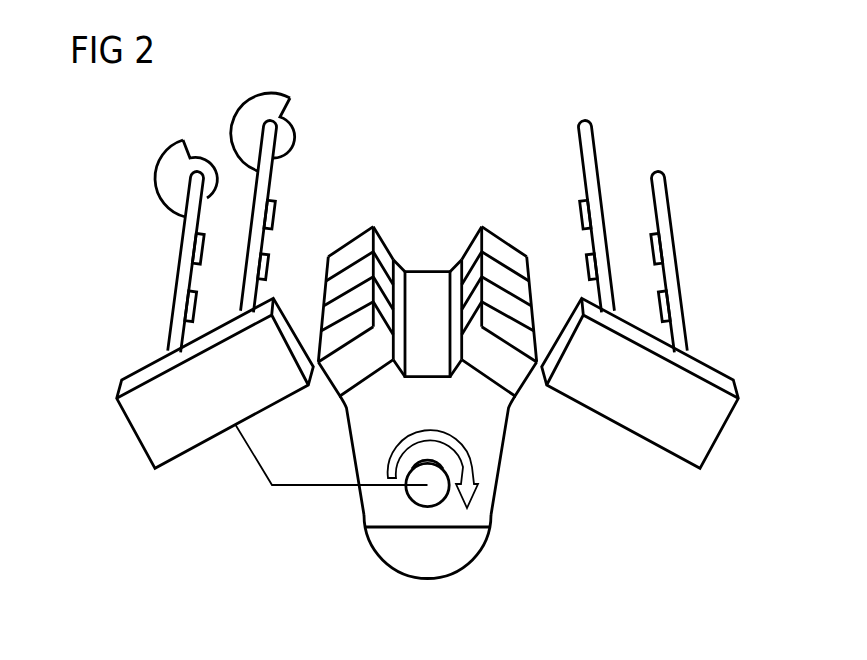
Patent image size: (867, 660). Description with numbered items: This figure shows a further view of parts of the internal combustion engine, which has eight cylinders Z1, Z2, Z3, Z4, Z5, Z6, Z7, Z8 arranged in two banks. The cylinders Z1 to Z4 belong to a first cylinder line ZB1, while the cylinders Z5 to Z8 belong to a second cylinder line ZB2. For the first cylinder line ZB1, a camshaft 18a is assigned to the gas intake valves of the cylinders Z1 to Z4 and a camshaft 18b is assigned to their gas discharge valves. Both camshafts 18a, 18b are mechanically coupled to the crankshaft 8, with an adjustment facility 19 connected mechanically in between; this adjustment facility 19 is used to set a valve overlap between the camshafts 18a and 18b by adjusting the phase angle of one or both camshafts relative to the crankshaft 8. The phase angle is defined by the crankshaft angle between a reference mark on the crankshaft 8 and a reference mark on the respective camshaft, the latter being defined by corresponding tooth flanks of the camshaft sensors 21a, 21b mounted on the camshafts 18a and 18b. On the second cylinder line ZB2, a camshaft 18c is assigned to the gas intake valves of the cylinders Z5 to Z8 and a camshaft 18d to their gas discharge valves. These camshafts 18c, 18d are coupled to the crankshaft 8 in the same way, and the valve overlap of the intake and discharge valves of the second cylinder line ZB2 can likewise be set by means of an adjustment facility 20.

The crankshaft 8 is at (418, 565).
The camshaft 18a is at (177, 277).
The camshaft 18b is at (272, 183).
The camshaft 18c is at (593, 160).
The camshaft 18d is at (675, 276).
The adjustment facility 19 is at (160, 455).
The adjustment facility 20 is at (695, 455).
The camshaft sensor 21a is at (157, 181).
The camshaft sensor 21b is at (248, 105).
The cylinder Z1 is at (338, 252).
The cylinder Z2 is at (350, 278).
The cylinder Z3 is at (350, 302).
The cylinder Z4 is at (347, 332).
The cylinder Z5 is at (510, 332).
The cylinder Z6 is at (508, 293).
The cylinder Z7 is at (508, 277).
The cylinder Z8 is at (498, 246).
The first cylinder line ZB1 is at (326, 382).
The second cylinder line ZB2 is at (551, 432).